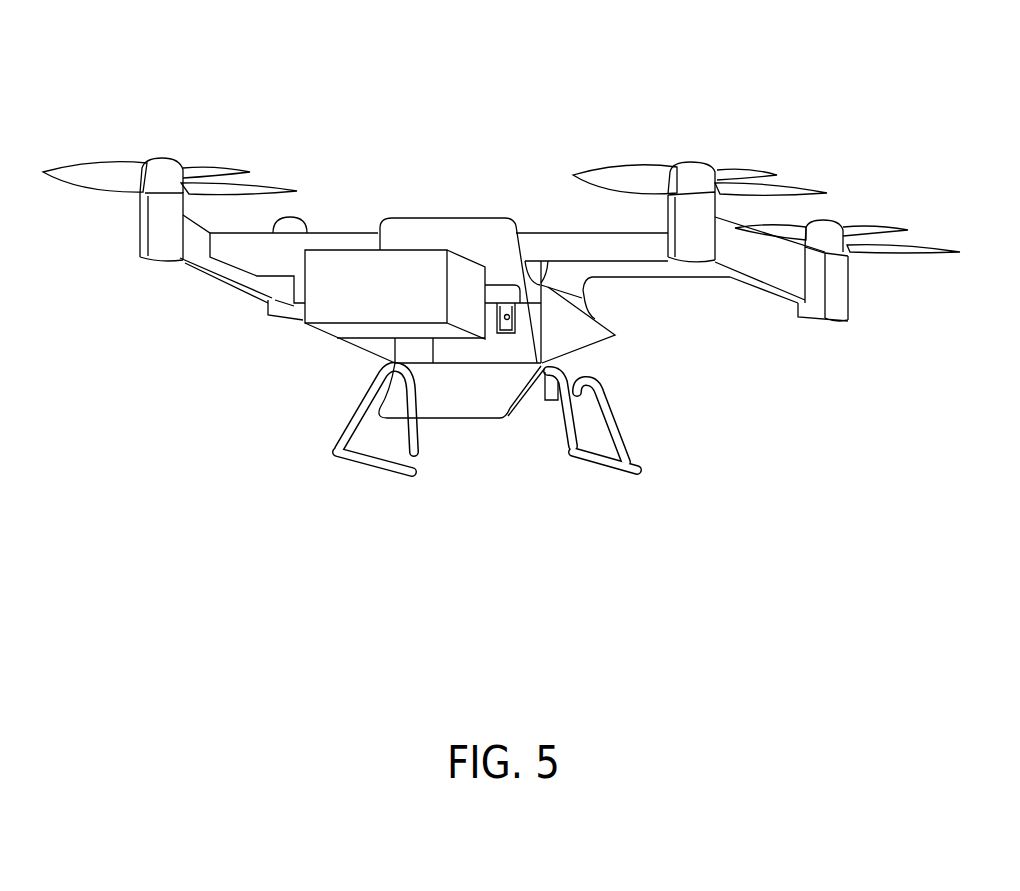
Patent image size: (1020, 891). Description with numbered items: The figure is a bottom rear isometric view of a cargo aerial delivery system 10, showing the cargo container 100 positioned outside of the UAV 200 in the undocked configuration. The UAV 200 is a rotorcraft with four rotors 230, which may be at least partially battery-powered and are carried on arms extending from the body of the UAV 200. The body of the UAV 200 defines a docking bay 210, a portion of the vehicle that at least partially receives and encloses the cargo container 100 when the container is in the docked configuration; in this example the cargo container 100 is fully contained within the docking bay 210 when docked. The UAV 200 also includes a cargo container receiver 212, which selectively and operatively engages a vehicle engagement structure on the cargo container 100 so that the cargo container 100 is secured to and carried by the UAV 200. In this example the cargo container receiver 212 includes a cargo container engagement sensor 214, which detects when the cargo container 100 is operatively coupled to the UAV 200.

The cargo aerial delivery system 10 is at (402, 58).
The cargo container 100 is at (323, 338).
The UAV 200 is at (475, 156).
The docking bay 210 is at (477, 352).
The cargo container receiver 212 is at (523, 321).
The cargo container engagement sensor 214 is at (501, 333).
The rotor 230 is at (785, 183).